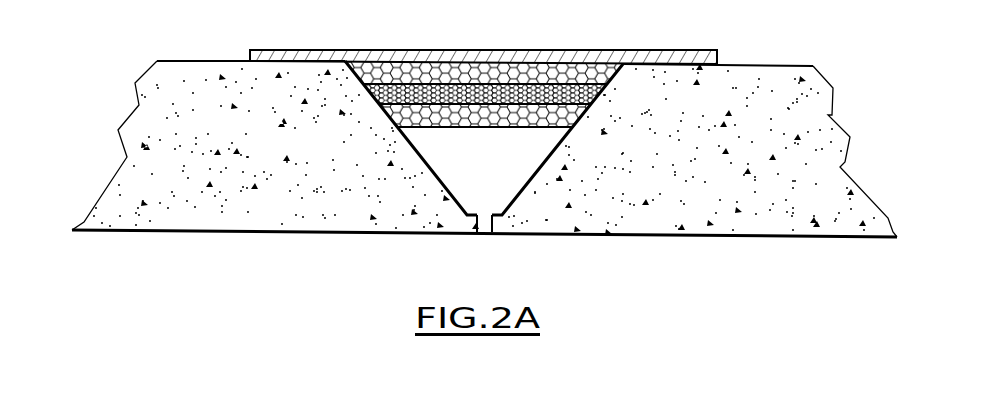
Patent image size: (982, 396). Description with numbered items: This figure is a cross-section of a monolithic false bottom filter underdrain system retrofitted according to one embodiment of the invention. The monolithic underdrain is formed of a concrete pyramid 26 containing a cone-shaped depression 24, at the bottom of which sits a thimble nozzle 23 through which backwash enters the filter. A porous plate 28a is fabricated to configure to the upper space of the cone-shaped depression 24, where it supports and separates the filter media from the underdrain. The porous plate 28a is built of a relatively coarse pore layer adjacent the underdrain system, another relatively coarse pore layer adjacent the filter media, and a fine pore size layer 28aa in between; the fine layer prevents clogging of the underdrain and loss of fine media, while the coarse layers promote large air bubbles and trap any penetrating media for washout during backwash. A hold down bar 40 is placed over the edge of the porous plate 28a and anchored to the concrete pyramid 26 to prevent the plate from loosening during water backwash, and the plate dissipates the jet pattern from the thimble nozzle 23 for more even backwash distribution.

The thimble nozzle 23 is at (483, 233).
The cone-shaped depression 24 is at (447, 162).
The concrete pyramid 26 is at (662, 233).
The porous plate 28a is at (388, 60).
The fine pore size layer 28aa is at (608, 92).
The hold down bar 40 is at (526, 51).